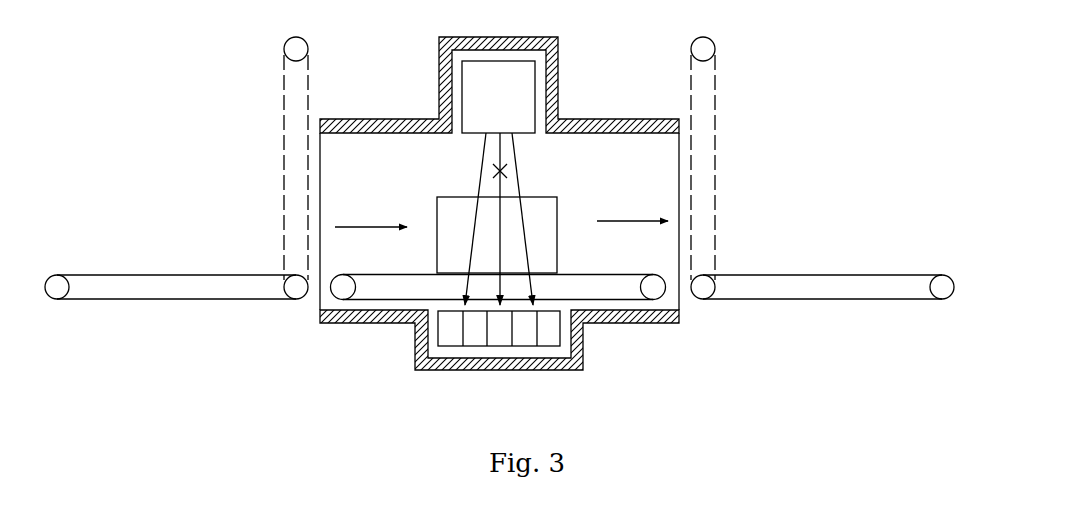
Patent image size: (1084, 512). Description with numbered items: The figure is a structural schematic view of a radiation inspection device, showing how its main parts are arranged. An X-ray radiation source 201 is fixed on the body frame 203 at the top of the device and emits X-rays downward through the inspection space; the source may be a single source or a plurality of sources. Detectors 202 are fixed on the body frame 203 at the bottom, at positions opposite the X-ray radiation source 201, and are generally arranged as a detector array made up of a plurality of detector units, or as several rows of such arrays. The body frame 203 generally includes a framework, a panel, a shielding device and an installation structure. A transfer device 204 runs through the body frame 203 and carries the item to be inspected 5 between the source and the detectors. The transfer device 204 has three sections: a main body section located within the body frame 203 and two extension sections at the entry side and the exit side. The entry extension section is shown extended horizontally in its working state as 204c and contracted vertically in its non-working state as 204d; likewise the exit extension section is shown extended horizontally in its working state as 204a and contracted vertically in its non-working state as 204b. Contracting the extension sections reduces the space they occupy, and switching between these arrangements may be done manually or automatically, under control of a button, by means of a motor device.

The item to be inspected 5 is at (458, 202).
The X-ray radiation source 201 is at (528, 127).
The detector 202 is at (552, 334).
The body frame 203 is at (673, 313).
The transfer device 204 is at (570, 280).
The exit extension section in working state 204a is at (798, 285).
The exit extension section contracted in non-working state 204b is at (705, 167).
The entry extension section in working state 204c is at (153, 282).
The entry extension section contracted in non-working state 204d is at (286, 128).